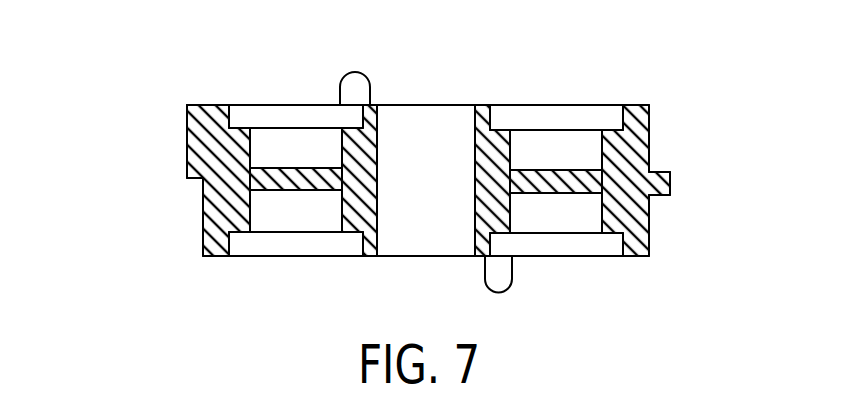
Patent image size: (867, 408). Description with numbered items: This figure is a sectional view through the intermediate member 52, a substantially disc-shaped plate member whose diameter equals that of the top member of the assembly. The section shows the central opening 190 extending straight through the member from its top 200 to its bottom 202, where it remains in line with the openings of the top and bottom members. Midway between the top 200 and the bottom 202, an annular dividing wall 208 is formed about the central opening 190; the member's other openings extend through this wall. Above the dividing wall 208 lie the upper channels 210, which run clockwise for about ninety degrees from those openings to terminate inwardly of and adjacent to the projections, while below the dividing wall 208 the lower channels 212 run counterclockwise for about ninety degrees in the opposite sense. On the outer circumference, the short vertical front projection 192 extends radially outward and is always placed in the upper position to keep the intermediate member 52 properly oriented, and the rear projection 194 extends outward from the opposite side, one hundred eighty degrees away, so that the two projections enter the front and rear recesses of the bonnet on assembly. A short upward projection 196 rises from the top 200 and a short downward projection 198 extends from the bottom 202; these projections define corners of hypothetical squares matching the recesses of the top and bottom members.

The intermediate member 52 is at (199, 204).
The central opening 190 is at (410, 152).
The front projection 192 is at (186, 138).
The rear projection 194 is at (660, 172).
The upward projection 196 is at (355, 71).
The downwardly extending projection 198 is at (497, 294).
The top 200 is at (217, 103).
The bottom 202 is at (644, 257).
The annular dividing wall 208 is at (293, 188).
The upper channel 210 is at (250, 144).
The lower channel 212 is at (338, 213).